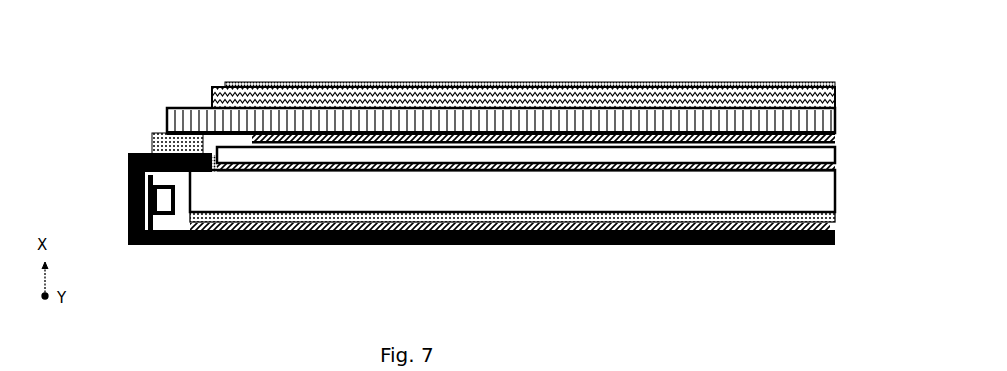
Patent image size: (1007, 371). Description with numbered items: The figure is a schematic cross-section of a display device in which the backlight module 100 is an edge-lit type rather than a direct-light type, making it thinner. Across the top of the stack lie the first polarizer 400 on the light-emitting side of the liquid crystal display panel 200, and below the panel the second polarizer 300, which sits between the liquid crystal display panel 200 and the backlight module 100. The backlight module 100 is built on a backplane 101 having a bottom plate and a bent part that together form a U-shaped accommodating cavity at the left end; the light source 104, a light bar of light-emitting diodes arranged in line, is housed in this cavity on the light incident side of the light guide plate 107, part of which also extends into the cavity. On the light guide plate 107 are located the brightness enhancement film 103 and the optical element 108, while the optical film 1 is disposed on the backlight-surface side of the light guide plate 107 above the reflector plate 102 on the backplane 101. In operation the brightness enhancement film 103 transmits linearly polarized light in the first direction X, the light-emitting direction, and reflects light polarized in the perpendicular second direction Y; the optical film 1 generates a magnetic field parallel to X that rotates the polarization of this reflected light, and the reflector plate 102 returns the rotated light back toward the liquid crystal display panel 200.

The first polarizer 400 is at (226, 84).
The liquid crystal display panel 200 is at (211, 99).
The second polarizer 300 is at (251, 137).
The optical element 108 is at (217, 152).
The brightness enhancement film 103 is at (134, 153).
The light guide plate 107 is at (187, 180).
The light source 104 is at (158, 200).
The backlight module 100 is at (68, 200).
The optical film 1 is at (183, 217).
The reflector plate 102 is at (183, 227).
The backplane 101 is at (143, 247).